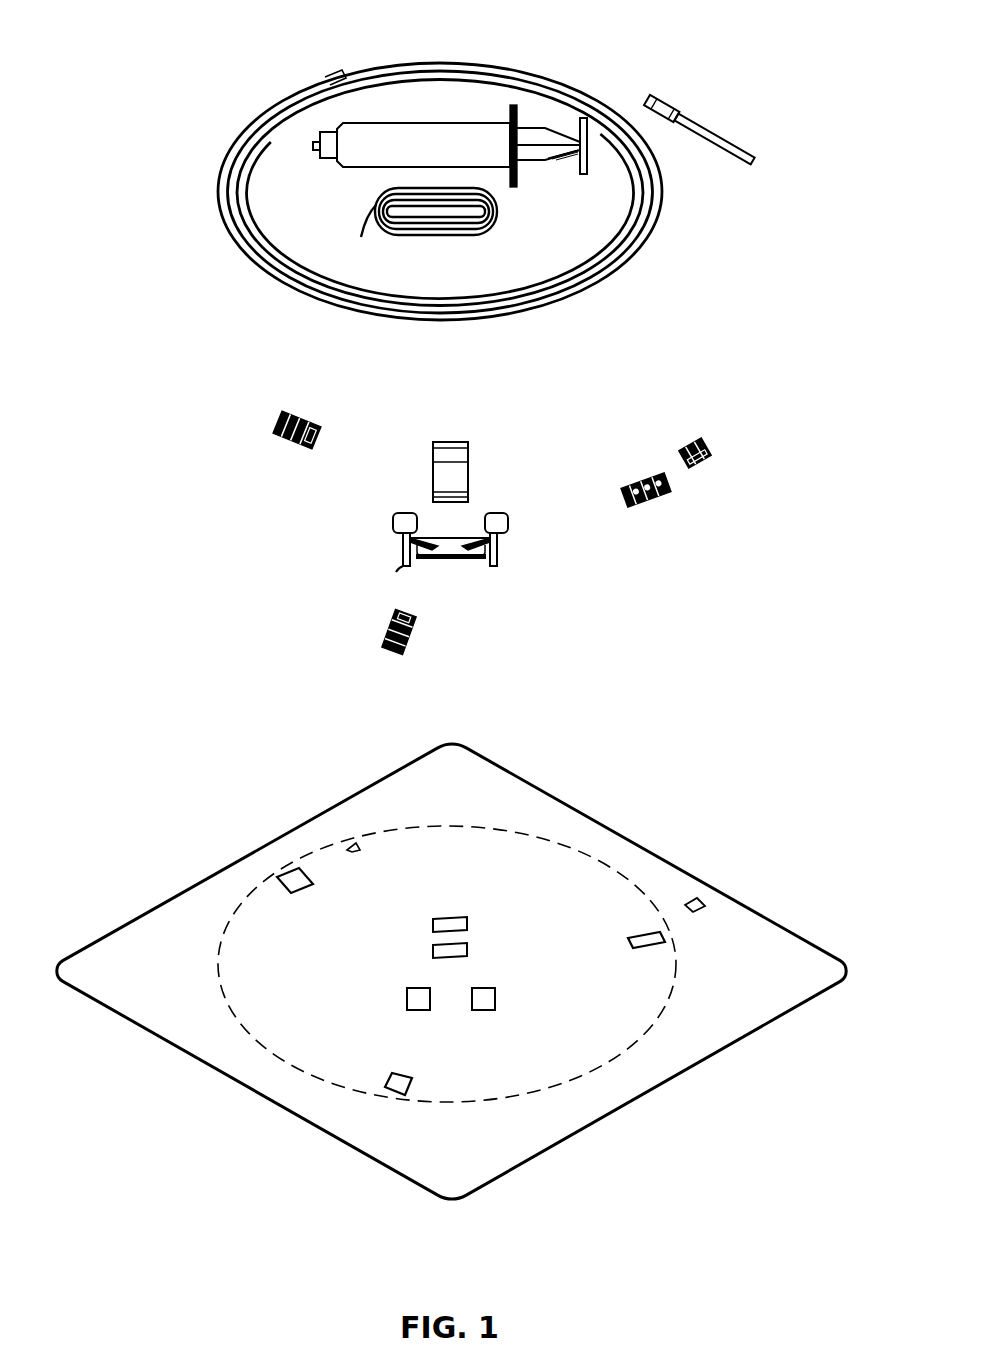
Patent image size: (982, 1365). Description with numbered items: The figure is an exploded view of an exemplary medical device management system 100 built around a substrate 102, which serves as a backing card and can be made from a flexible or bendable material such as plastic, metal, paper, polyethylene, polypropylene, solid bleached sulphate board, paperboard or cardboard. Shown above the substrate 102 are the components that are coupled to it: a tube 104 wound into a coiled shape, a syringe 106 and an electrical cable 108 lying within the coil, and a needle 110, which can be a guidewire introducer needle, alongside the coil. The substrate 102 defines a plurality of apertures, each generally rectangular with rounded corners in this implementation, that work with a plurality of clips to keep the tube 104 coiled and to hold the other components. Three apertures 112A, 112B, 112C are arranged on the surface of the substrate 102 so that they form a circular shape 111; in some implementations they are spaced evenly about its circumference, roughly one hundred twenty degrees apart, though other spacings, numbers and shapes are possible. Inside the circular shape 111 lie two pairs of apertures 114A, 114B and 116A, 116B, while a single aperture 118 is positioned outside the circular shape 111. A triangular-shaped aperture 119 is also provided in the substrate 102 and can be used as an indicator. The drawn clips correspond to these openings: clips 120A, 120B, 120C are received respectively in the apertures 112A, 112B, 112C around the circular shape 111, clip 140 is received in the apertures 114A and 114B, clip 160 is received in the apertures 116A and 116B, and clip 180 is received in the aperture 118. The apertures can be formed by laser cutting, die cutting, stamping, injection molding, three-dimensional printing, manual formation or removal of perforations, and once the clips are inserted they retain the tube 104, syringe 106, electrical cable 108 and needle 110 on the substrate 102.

The medical device management system 100 is at (165, 42).
The substrate 102 is at (115, 957).
The tube 104 is at (287, 98).
The syringe 106 is at (388, 157).
The electrical cable 108 is at (395, 237).
The needle 110 is at (668, 105).
The circular shape 111 is at (527, 832).
The aperture 112A is at (288, 872).
The aperture 112B is at (402, 1075).
The aperture 112C is at (645, 933).
The aperture 114A is at (470, 920).
The aperture 114B is at (433, 950).
The aperture 116A is at (407, 998).
The aperture 116B is at (495, 998).
The aperture 118 is at (698, 902).
The triangular-shaped aperture 119 is at (352, 847).
The clip 120A is at (282, 412).
The clip 120B is at (388, 648).
The clip 120C is at (638, 480).
The clip 140 is at (442, 443).
The clip 160 is at (408, 562).
The clip 180 is at (700, 442).